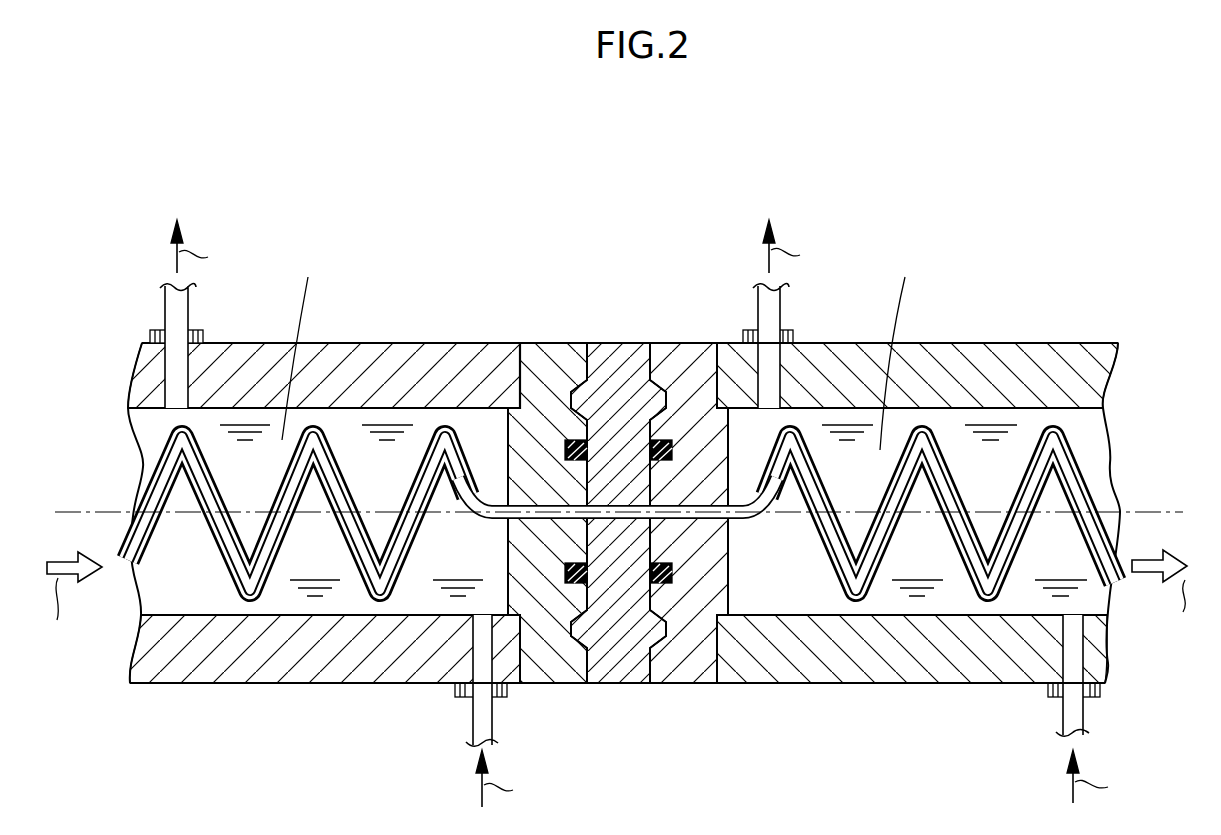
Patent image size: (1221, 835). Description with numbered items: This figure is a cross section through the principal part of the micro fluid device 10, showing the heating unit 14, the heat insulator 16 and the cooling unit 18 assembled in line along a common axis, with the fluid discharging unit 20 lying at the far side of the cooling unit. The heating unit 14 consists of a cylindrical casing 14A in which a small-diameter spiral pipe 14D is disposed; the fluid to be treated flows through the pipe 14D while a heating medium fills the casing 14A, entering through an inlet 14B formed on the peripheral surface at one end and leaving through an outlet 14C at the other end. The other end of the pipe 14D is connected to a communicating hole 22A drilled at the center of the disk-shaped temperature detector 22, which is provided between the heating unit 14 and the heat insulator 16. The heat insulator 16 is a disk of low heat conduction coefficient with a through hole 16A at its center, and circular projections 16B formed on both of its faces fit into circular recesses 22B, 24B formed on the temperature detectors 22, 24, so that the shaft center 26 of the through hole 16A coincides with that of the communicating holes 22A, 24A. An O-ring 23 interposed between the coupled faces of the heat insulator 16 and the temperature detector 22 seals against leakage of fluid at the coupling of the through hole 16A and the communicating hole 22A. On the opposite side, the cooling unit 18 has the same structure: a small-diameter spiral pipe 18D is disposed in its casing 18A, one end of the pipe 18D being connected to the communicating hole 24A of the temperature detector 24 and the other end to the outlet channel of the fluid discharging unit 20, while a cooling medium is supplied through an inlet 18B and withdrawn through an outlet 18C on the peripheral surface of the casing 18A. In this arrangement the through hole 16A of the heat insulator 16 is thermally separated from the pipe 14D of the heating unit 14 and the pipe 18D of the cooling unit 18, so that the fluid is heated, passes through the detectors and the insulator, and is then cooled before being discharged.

The micro fluid device 10 is at (623, 438).
The heating unit 14 is at (324, 456).
The cylindrical casing 14A is at (370, 358).
The inlet 14B is at (470, 720).
The outlet 14C is at (190, 300).
The small-diameter pipe 14D is at (217, 567).
The heat insulator 16 is at (624, 431).
The through hole 16A is at (632, 460).
The circular projections 16B is at (577, 395).
The cooling unit 18 is at (952, 478).
The casing 18A is at (990, 358).
The inlet 18B is at (1085, 718).
The outlet 18C is at (782, 300).
The spiral pipe 18D is at (878, 592).
The fluid discharging unit 20 is at (617, 495).
The temperature detector 22 is at (583, 586).
The communicating hole 22A is at (535, 520).
The circular recess 22B is at (575, 640).
The O-ring 23 is at (678, 437).
The temperature detector 24 is at (714, 586).
The communicating hole 24A is at (708, 520).
The circular recess 24B is at (668, 640).
The shaft center 26 is at (1160, 512).